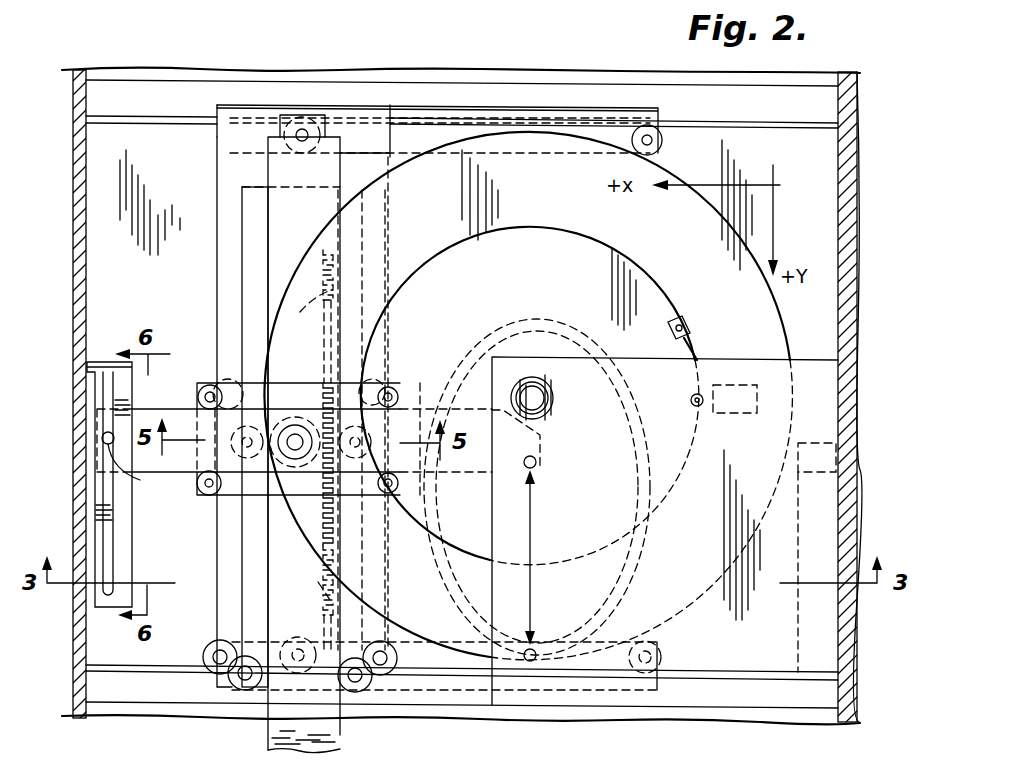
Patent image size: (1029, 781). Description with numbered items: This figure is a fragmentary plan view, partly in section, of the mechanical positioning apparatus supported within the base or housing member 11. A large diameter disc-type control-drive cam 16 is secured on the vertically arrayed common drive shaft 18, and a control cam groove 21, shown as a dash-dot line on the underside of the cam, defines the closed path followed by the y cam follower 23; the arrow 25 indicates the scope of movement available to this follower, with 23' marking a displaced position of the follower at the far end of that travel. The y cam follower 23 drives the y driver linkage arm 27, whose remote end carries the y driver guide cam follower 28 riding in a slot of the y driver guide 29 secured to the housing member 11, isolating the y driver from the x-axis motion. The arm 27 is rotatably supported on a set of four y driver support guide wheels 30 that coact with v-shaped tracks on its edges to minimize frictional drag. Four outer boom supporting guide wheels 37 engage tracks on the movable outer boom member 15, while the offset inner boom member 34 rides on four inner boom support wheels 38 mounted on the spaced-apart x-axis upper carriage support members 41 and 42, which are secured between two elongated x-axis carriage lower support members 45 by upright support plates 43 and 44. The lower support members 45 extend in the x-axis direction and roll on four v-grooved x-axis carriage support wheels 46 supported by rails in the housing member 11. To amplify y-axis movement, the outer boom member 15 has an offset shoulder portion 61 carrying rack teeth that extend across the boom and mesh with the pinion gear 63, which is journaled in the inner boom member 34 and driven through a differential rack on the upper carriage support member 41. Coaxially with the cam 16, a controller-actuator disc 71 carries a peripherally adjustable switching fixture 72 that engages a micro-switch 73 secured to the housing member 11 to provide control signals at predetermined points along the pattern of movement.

The base or housing member 11 is at (80, 240).
The outer boom member 15 is at (268, 172).
The disc-type control-drive cam 16 is at (320, 252).
The common drive shaft 18 is at (540, 402).
The control cam groove 21 is at (506, 332).
The y cam follower 23 is at (539, 440).
The displaced reference point 23' is at (548, 624).
The arrow 25 is at (531, 500).
The y driver linkage arm 27 is at (152, 386).
The y driver guide cam follower 28 is at (128, 474).
The y driver guide 29 is at (104, 365).
The y driver support guide wheels 30 is at (202, 390).
The inner boom member 34 is at (242, 252).
The outer boom supporting guide wheels 37 is at (312, 420).
The inner boom support wheels 38 is at (226, 378).
The x-axis upper carriage support member 41 is at (217, 128).
The x-axis upper carriage support member 42 is at (390, 135).
The upright support plate 43 is at (217, 117).
The upright support plate 44 is at (345, 125).
The x-axis carriage lower support members 45 is at (658, 116).
The x-axis carriage support wheels 46 is at (305, 153).
The offset shoulder portion 61 is at (302, 312).
The pinion gear 63 is at (322, 500).
The controller-actuator disc 71 is at (568, 232).
The switching fixture 72 is at (678, 318).
The micro-switch 73 is at (725, 413).